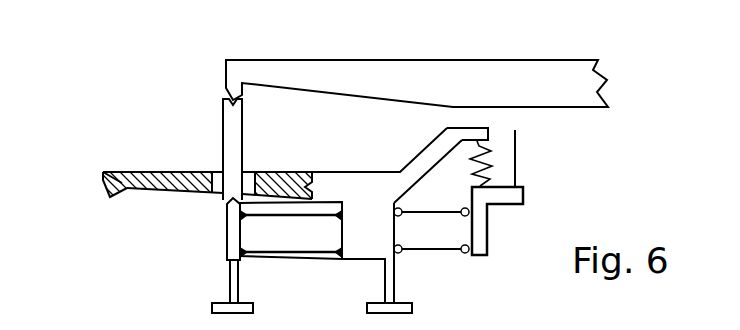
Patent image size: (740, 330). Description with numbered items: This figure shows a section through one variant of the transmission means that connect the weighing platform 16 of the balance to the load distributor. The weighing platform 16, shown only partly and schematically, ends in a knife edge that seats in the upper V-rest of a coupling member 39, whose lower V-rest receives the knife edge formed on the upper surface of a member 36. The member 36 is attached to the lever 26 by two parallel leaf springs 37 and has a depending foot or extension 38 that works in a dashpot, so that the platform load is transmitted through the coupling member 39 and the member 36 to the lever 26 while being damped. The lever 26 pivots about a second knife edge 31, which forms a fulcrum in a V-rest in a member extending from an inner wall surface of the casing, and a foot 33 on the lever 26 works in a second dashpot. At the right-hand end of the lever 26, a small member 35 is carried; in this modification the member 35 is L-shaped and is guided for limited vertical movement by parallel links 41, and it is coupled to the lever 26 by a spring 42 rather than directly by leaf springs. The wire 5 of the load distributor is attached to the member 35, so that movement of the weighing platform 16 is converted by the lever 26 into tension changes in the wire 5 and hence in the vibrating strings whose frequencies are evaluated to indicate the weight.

The weighing platform 16 is at (472, 77).
The coupling member 39 is at (233, 141).
The second knife edge 31 is at (113, 183).
The member with knife edge 36 is at (230, 233).
The foot rod 38 is at (228, 278).
The parallel leaf springs 37 is at (265, 216).
The foot 33 is at (384, 290).
The lever 26 is at (390, 211).
The parallel links 41 is at (423, 213).
The spring 42 is at (472, 167).
The member 35 is at (490, 242).
The wire 5 is at (516, 146).